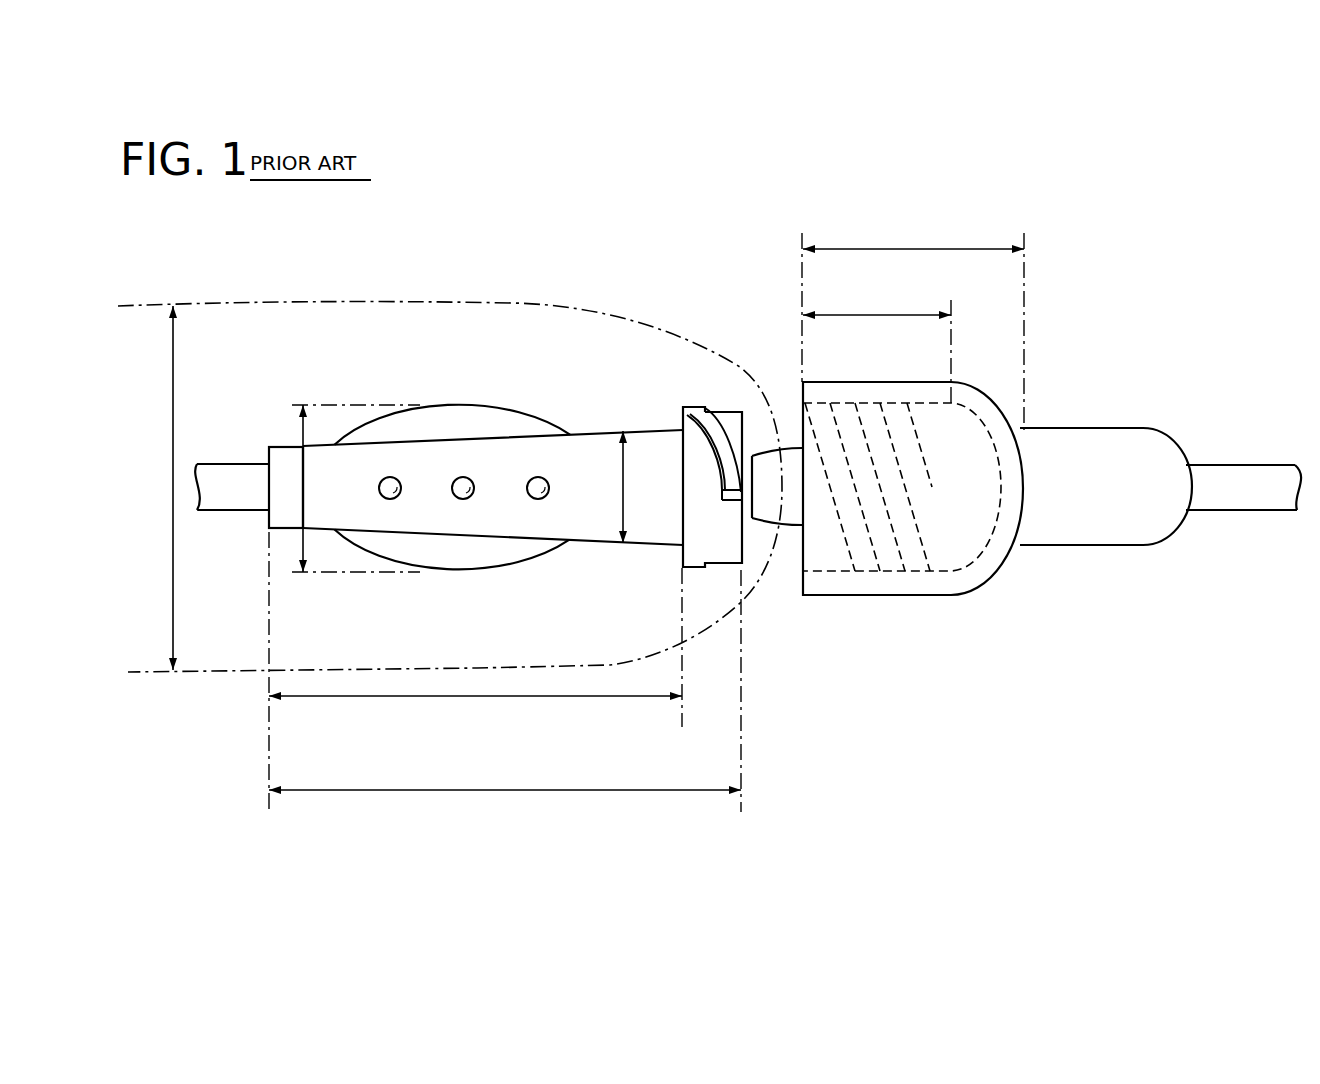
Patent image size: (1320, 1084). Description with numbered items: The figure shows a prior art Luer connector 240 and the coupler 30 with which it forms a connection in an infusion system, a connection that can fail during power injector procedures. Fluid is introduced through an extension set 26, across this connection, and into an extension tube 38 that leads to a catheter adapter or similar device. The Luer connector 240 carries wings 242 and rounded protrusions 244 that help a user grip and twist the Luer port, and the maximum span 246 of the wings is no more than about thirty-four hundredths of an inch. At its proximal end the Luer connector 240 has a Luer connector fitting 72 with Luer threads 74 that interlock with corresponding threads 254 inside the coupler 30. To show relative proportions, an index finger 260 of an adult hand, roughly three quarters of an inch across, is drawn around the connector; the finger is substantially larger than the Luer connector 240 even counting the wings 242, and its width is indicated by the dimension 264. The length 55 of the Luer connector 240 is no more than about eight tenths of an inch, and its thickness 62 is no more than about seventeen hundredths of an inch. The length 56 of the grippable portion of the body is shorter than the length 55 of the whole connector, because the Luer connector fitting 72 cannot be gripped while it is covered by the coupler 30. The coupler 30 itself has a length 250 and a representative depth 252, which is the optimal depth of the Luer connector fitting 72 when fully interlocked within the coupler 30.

The extension set 26 is at (1235, 500).
The coupler 30 is at (968, 577).
The extension tube 38 is at (226, 500).
The length of the Luer connector 55 is at (447, 790).
The length of the grippable portion 56 is at (490, 696).
The thickness 62 is at (622, 481).
The Luer connector fitting 72 is at (718, 556).
The Luer threads 74 is at (690, 410).
The Luer connector 240 is at (290, 453).
The wings 242 is at (460, 408).
The rounded protrusions 244 is at (390, 499).
The maximum span of the wings 246 is at (303, 482).
The length of the coupler 250 is at (905, 248).
The representative depth 252 is at (862, 314).
The corresponding threads 254 is at (840, 528).
The index finger 260 is at (420, 305).
The envelope height 264 is at (173, 425).